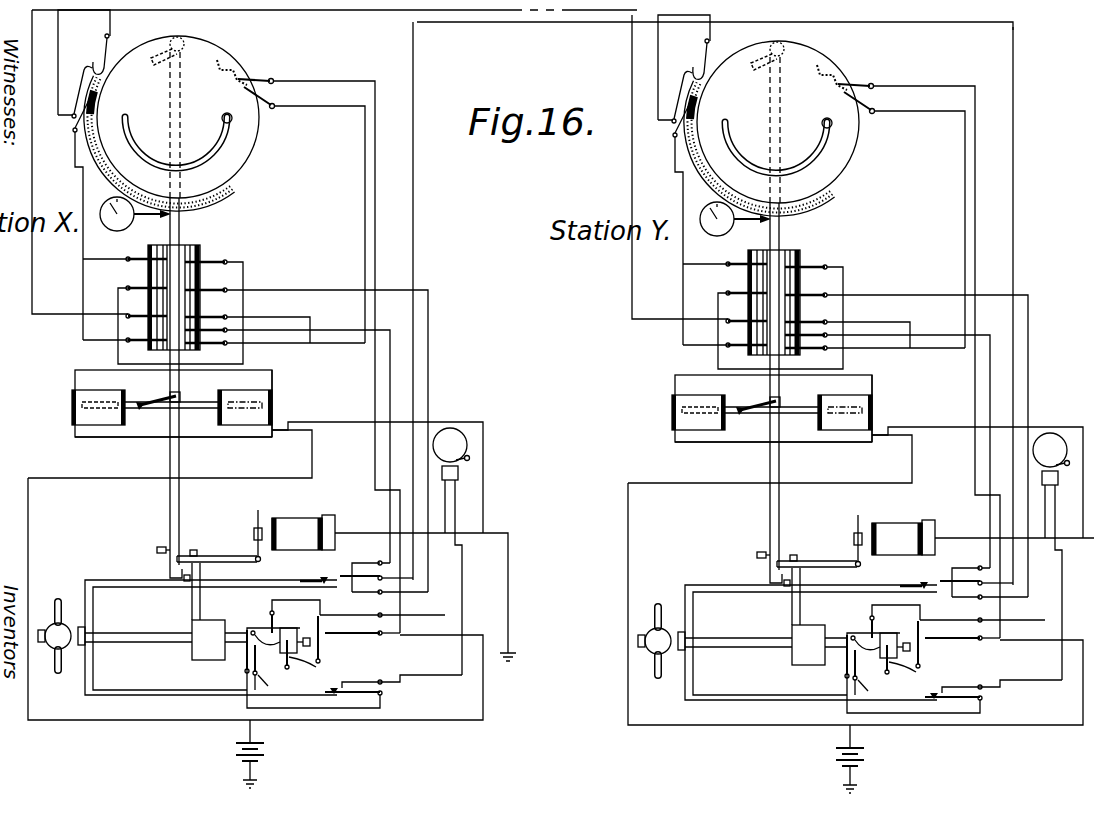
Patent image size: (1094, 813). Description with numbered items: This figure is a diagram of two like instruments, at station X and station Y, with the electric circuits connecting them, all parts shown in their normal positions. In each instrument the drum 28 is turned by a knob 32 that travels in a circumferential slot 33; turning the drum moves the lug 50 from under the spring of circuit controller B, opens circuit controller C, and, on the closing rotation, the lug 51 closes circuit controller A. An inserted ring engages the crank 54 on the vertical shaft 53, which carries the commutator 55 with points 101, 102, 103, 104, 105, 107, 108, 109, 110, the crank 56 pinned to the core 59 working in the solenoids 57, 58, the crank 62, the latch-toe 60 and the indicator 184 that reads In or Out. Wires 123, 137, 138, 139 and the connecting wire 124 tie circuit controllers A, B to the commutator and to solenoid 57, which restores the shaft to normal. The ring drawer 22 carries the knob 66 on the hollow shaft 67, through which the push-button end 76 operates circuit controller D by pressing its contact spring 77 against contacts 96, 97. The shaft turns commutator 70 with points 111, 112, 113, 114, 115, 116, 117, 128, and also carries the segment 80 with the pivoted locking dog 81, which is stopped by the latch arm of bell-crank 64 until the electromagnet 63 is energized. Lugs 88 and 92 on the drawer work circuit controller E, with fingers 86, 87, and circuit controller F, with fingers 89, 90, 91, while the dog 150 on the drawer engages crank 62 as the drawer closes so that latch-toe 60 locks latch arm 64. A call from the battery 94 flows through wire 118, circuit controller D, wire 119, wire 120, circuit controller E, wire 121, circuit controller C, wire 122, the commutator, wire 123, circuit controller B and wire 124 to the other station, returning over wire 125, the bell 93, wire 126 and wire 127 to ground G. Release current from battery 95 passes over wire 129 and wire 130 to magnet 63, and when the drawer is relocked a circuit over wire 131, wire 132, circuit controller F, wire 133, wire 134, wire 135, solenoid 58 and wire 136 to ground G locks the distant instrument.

The wire 124 is at (58, 40).
The circuit controller A is at (100, 58).
The circuit controller B is at (71, 124).
The circuit controller C is at (246, 76).
The drum 28 is at (228, 60).
The crank 54 is at (160, 63).
The lug 50 is at (97, 104).
The vertical shaft 53 is at (182, 106).
The knob 32 is at (237, 123).
The circumferential slot 33 is at (223, 143).
The lug 51 is at (232, 191).
The wire 137 is at (32, 198).
The indicator 184 is at (132, 225).
The commutator 55 is at (199, 246).
The contact point 101 is at (142, 251).
The contact point 102 is at (180, 303).
The contact point 103 is at (141, 279).
The contact point 104 is at (210, 281).
The contact point 105 is at (247, 320).
The contact point 107 is at (144, 306).
The contact point 108 is at (209, 323).
The contact point 109 is at (144, 350).
The contact point 110 is at (275, 351).
The wire 123 is at (83, 283).
The wire 121 is at (380, 82).
The wire 122 is at (366, 123).
The wire 133 is at (414, 196).
The wire 134 is at (430, 364).
The wire 131 is at (273, 316).
The wire 132 is at (390, 384).
The wire 135 is at (273, 388).
The wire 136 is at (348, 422).
The wire 138 is at (109, 372).
The wire 139 is at (151, 438).
The crank 56 is at (160, 400).
The core 59 is at (202, 403).
The solenoid 57 is at (97, 427).
The solenoid 58 is at (253, 427).
The bell 93 is at (468, 446).
The wire 126 is at (458, 504).
The wire 127 is at (510, 553).
The ground G is at (513, 667).
The wire 125 is at (462, 588).
The wire 130 is at (421, 686).
The wire 118 is at (424, 722).
The electromagnet 63 is at (303, 532).
The bell-crank 64 is at (221, 556).
The locking dog 81 is at (197, 543).
The latch-toe 60 is at (160, 548).
The crank 62 is at (172, 566).
The segment 80 is at (200, 600).
The dog 150 is at (184, 581).
The ring-withdrawing drawer 22 is at (113, 580).
The knob 66 is at (58, 598).
The push-button end 76 is at (38, 636).
The shaft 67 is at (150, 644).
The contact point 111 is at (244, 652).
The contact point 112 is at (250, 673).
The commutator 70 is at (254, 630).
The contact point 128 is at (286, 622).
The wire 129 is at (296, 603).
The contact point 115 is at (295, 640).
The contact point 113 is at (274, 657).
The contact spring 77 is at (328, 637).
The contact point 116 is at (332, 664).
The contact point 117 is at (318, 670).
The contact point 114 is at (268, 683).
The wire 119 is at (281, 682).
The lug 88 is at (341, 693).
The stationary contact finger 87 is at (362, 674).
The flexible contact finger 86 is at (365, 700).
The circuit controller E is at (386, 694).
The wire 120 is at (320, 708).
The stationary contact finger 89 is at (371, 569).
The flexible contact finger 90 is at (366, 573).
The stationary contact finger 91 is at (390, 587).
The lug 92 is at (290, 581).
The circuit controller F is at (318, 576).
The contact spring 97 is at (382, 608).
The contact 96 is at (362, 625).
The circuit controller D is at (334, 636).
The battery 94 is at (266, 754).
The battery 95 is at (865, 759).